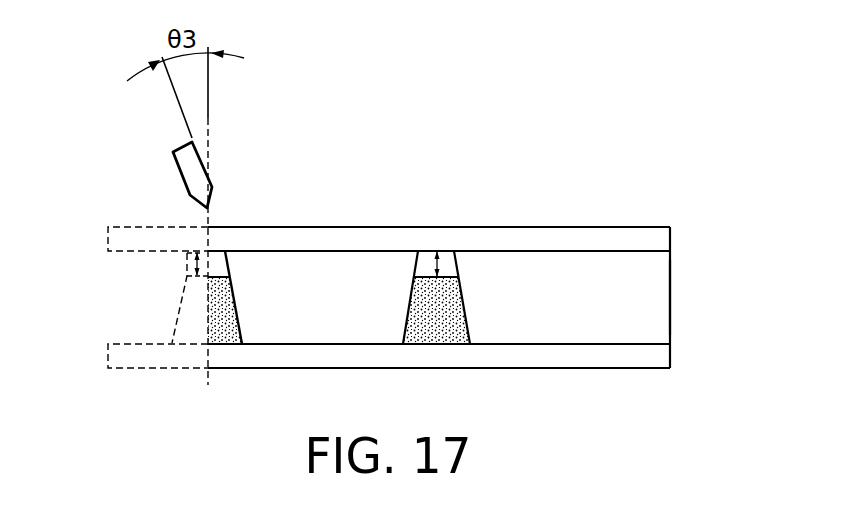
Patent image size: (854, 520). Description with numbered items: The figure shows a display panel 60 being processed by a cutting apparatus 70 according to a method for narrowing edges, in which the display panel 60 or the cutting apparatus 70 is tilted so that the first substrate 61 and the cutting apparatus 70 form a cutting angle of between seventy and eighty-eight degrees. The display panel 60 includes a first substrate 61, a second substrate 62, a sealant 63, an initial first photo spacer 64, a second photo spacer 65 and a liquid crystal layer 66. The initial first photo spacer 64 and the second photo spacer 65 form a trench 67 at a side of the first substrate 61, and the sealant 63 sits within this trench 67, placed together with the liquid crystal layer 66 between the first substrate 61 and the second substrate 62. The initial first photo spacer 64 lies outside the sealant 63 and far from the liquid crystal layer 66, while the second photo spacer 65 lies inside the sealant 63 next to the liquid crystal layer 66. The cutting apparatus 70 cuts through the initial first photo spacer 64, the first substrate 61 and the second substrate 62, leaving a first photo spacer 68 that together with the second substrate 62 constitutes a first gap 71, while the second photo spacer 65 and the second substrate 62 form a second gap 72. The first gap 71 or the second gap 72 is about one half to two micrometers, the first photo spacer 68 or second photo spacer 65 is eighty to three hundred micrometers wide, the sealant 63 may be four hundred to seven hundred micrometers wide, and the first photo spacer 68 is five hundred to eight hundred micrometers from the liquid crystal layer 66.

The display panel 60 is at (666, 130).
The first substrate 61 is at (655, 357).
The second substrate 62 is at (655, 242).
The sealant 63 is at (317, 270).
The initial first photo spacer 64 is at (193, 310).
The second photo spacer 65 is at (423, 305).
The liquid crystal layer 66 is at (655, 300).
The trench 67 is at (268, 270).
The first photo spacer 68 is at (225, 344).
The cutting apparatus 70 is at (187, 166).
The first gap 71 is at (192, 262).
The second gap 72 is at (439, 265).